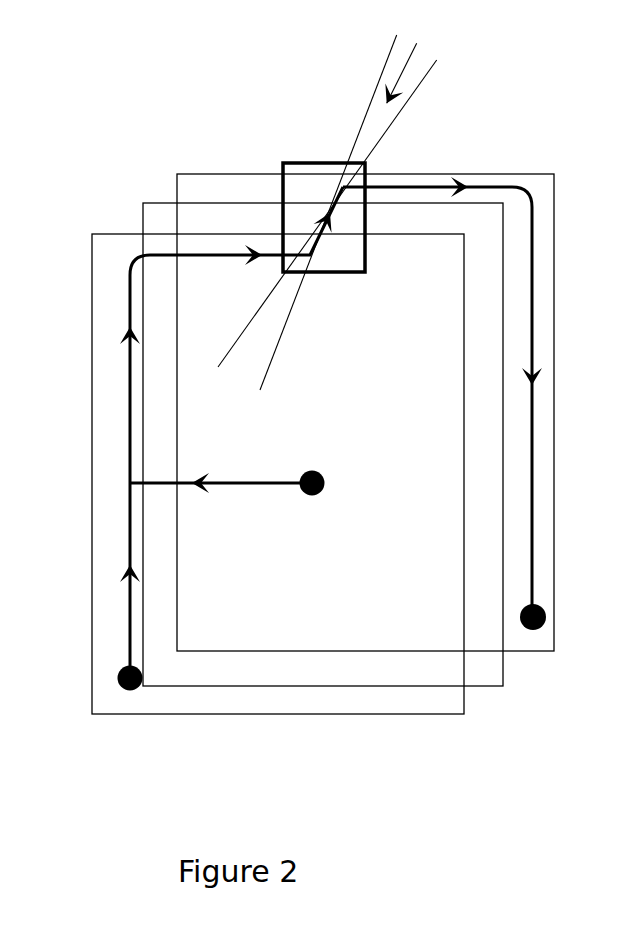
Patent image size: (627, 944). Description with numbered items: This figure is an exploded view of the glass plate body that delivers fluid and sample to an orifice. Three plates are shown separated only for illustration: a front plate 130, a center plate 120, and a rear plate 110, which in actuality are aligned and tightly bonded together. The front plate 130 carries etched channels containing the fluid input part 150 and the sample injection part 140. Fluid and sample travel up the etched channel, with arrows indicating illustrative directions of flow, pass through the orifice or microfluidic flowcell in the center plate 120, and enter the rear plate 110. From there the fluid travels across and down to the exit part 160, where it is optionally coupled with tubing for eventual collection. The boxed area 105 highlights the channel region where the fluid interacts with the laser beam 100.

The laser beam 100 is at (330, 201).
The boxed area 105 is at (324, 203).
The rear plate 110 is at (342, 405).
The center plate 120 is at (298, 436).
The front plate 130 is at (258, 450).
The sample injection part 140 is at (248, 484).
The fluid input part 150 is at (152, 680).
The exit part 160 is at (556, 618).